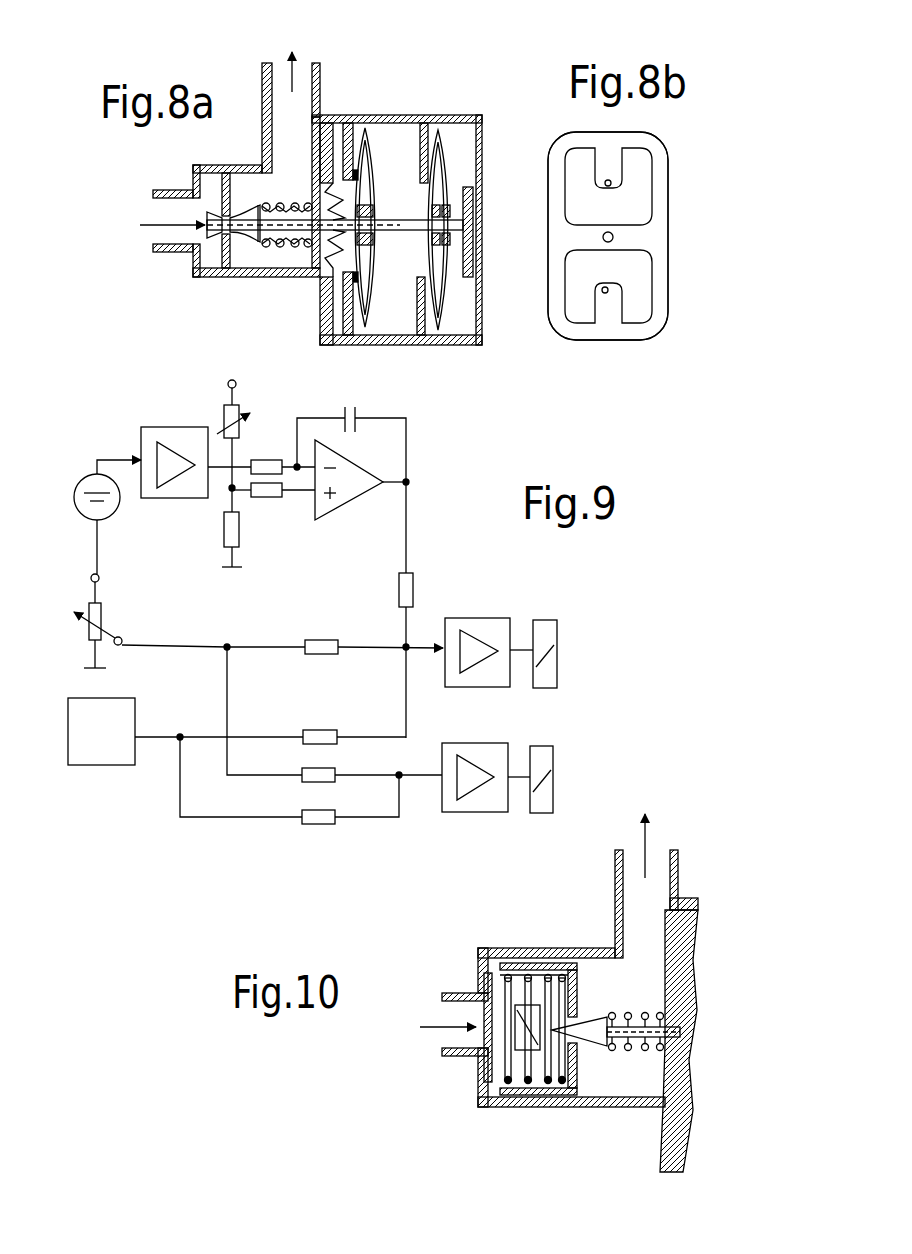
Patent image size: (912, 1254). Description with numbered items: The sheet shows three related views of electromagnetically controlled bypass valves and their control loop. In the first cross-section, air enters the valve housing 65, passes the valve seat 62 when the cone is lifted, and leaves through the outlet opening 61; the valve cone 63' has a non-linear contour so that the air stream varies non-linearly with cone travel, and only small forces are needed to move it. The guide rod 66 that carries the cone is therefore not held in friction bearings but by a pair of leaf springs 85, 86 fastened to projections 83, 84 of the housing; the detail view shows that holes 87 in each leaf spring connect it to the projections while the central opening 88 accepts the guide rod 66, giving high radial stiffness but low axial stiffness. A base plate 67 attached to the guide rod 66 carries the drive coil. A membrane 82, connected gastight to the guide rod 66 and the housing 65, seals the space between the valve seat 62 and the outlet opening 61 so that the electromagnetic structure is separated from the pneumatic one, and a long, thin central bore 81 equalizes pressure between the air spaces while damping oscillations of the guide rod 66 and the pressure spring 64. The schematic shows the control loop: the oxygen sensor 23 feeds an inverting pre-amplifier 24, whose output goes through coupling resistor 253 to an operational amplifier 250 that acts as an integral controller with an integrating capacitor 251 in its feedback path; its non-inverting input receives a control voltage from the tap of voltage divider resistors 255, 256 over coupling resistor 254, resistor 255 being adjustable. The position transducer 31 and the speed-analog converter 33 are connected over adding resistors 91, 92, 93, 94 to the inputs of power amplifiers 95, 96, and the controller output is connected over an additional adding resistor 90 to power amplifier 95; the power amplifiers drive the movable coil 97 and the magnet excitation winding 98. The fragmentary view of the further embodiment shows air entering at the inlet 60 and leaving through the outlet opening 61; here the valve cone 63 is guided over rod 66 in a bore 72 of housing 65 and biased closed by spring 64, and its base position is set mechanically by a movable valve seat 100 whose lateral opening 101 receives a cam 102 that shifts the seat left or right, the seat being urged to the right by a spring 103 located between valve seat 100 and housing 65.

In FIG. 8a, the outlet opening 61 is at (302, 72).
In FIG. 10, the outlet opening 61 is at (658, 862).
In FIG. 8a, the valve housing 65 is at (328, 115).
In FIG. 10, the valve housing 65 is at (675, 948).
In FIG. 8a, the guide rod 66 is at (162, 232).
In FIG. 10, the guide rod 66 is at (680, 1040).
In FIG. 8a, the valve seat 62 is at (240, 253).
In FIG. 8a, the valve cone 63' is at (257, 202).
In FIG. 10, the valve cone 63 is at (586, 1053).
In FIG. 8a, the pressure spring 64 is at (288, 243).
In FIG. 10, the pressure spring 64 is at (632, 1012).
In FIG. 8a, the central bore 81 is at (258, 250).
In FIG. 8a, the membrane 82 is at (345, 205).
In FIG. 8a, the projection 83 is at (340, 308).
In FIG. 8a, the projection 84 is at (420, 140).
In FIG. 8a, the leaf spring 85 is at (370, 168).
In FIG. 8b, the leaf spring 85 is at (632, 236).
In FIG. 8a, the leaf spring 86 is at (448, 160).
In FIG. 8b, the leaf spring 86 is at (644, 236).
In FIG. 8a, the base plate 67 is at (470, 187).
In FIG. 8b, the holes 87 is at (608, 183).
In FIG. 8b, the central opening 88 is at (608, 232).
In FIG. 9, the oxygen sensor 23 is at (104, 515).
In FIG. 9, the pre-amplifier 24 is at (180, 490).
In FIG. 9, the voltage divider resistor 255 is at (224, 420).
In FIG. 9, the coupling resistor 253 is at (282, 452).
In FIG. 9, the coupling resistor 254 is at (266, 497).
In FIG. 9, the voltage divider resistor 256 is at (240, 535).
In FIG. 9, the operational amplifier 250 is at (355, 492).
In FIG. 9, the integrating capacitor 251 is at (356, 426).
In FIG. 9, the additional adding resistor 90 is at (412, 590).
In FIG. 9, the adding resistor 91 is at (316, 640).
In FIG. 9, the adding resistor 92 is at (326, 730).
In FIG. 9, the adding resistor 93 is at (305, 770).
In FIG. 9, the adding resistor 94 is at (306, 811).
In FIG. 9, the power amplifier 95 is at (474, 618).
In FIG. 9, the power amplifier 96 is at (446, 795).
In FIG. 9, the movable coil 97 is at (545, 625).
In FIG. 9, the excitation winding 98 is at (548, 770).
In FIG. 9, the position transducer 31 is at (103, 618).
In FIG. 9, the speed-analog converter 33 is at (110, 758).
In FIG. 10, the inlet 60 is at (445, 1037).
In FIG. 10, the bore 72 is at (677, 1015).
In FIG. 10, the movable valve seat 100 is at (572, 1090).
In FIG. 10, the lateral opening 101 is at (533, 1050).
In FIG. 10, the cam 102 is at (505, 1078).
In FIG. 10, the spring 103 is at (520, 965).